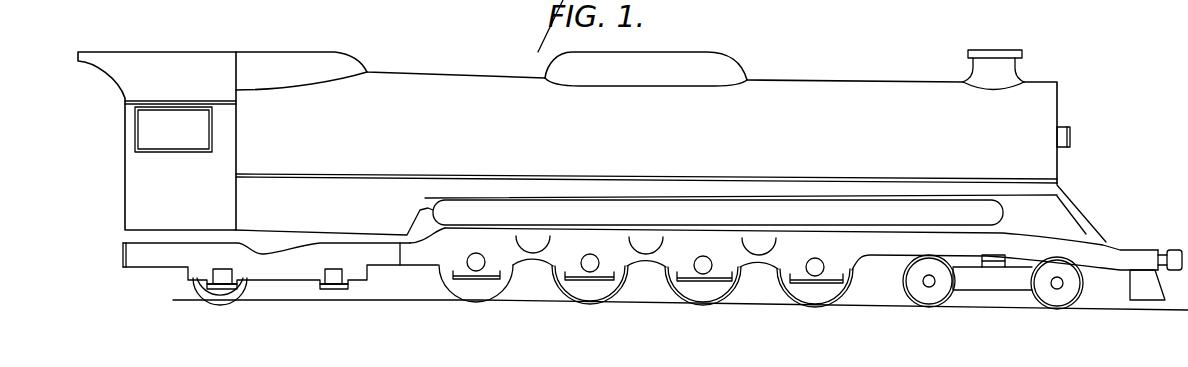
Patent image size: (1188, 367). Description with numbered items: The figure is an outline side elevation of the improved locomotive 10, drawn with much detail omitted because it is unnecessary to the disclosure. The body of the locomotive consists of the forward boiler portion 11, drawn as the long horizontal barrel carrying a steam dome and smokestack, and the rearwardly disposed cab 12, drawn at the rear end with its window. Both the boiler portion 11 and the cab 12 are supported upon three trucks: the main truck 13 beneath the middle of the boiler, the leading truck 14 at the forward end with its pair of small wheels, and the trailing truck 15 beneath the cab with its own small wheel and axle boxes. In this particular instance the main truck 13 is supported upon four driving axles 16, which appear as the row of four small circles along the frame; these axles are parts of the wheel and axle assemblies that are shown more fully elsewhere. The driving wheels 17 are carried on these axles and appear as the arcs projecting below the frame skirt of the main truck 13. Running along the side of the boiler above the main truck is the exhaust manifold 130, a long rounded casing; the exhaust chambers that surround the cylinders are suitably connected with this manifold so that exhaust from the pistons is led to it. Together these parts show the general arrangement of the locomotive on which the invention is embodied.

The locomotive 10 is at (815, 76).
The forward boiler portion 11 is at (487, 90).
The cab 12 is at (133, 193).
The main truck 13 is at (538, 264).
The leading truck 14 is at (983, 281).
The trailing truck 15 is at (293, 273).
The driving axle 16 is at (468, 257).
The driving wheel 17 is at (475, 292).
The exhaust manifold 130 is at (630, 198).